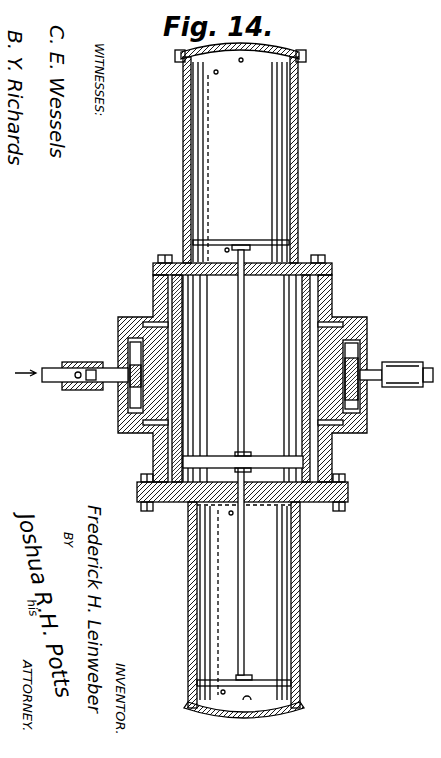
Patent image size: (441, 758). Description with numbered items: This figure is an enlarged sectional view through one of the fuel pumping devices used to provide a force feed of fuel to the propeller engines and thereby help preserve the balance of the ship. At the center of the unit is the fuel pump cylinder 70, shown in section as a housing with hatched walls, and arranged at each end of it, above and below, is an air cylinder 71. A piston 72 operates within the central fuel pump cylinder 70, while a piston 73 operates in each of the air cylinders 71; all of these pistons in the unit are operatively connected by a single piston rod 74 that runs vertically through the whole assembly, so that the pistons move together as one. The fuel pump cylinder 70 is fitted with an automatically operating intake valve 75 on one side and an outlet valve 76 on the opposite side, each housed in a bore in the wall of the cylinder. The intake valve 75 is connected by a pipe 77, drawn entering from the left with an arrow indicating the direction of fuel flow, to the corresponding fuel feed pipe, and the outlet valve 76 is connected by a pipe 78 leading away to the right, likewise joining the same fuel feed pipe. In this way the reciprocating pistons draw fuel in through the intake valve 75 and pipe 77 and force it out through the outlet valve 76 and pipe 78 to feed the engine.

The fuel pump cylinder 70 is at (242, 383).
The air cylinder 71 is at (240, 380).
The piston 72 is at (219, 457).
The piston 73 is at (240, 240).
The piston rod 74 is at (245, 345).
The intake valve 75 is at (115, 358).
The outlet valve 76 is at (366, 352).
The pipe 77 is at (55, 388).
The pipe 78 is at (380, 388).